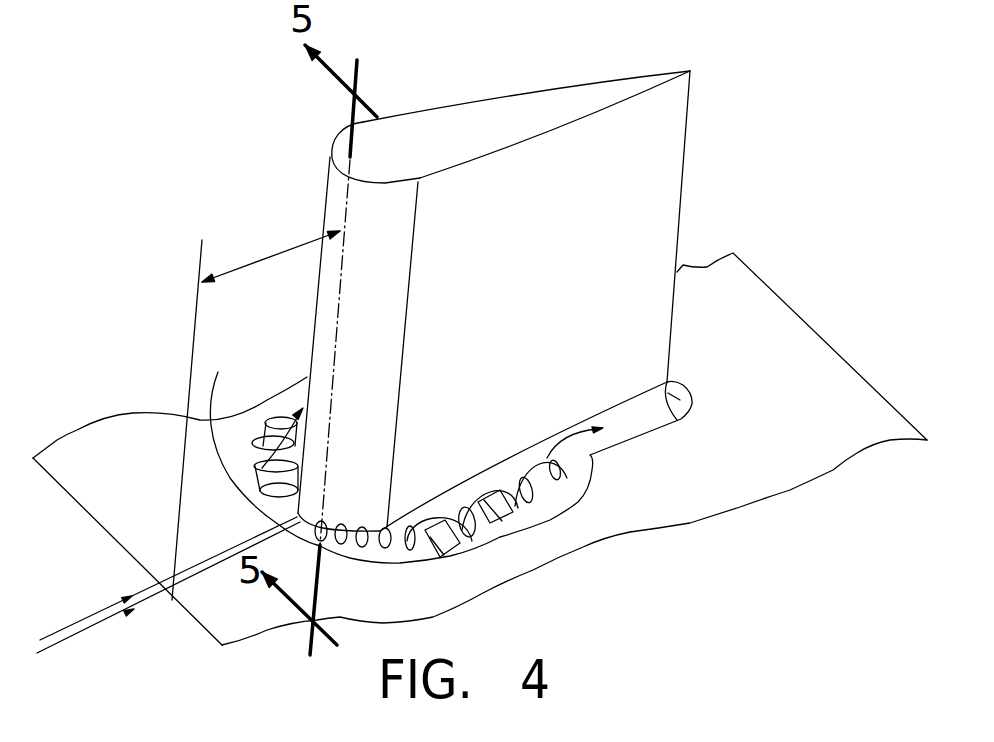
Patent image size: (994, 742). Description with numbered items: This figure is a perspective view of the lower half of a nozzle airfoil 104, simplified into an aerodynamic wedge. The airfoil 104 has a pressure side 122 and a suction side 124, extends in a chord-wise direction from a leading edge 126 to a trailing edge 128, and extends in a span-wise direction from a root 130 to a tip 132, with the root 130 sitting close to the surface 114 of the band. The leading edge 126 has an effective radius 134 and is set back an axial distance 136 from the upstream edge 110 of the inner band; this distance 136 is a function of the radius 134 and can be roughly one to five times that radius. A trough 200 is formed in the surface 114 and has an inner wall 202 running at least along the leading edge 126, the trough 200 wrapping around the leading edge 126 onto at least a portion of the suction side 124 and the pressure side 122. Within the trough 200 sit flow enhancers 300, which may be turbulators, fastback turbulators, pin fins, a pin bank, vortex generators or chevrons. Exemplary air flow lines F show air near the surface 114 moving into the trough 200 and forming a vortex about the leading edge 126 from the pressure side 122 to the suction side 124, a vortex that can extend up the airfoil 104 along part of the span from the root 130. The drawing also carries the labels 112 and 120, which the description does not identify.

The nozzle airfoil 104 is at (566, 288).
The upstream edge 110 is at (112, 540).
The platform side edge 112 is at (792, 308).
The surface 114 is at (797, 410).
The airfoil 120 is at (523, 288).
The pressure side 122 is at (442, 105).
The suction side 124 is at (538, 135).
The leading edge 126 is at (347, 165).
The trailing edge 128 is at (695, 63).
The root 130 is at (667, 376).
The tip 132 is at (502, 107).
The effective radius 134 is at (386, 150).
The axial distance 136 is at (272, 256).
The trough 200 is at (480, 483).
The inner wall 202 is at (322, 540).
The flow enhancer 300 is at (293, 450).
The air flow lines F is at (167, 587).